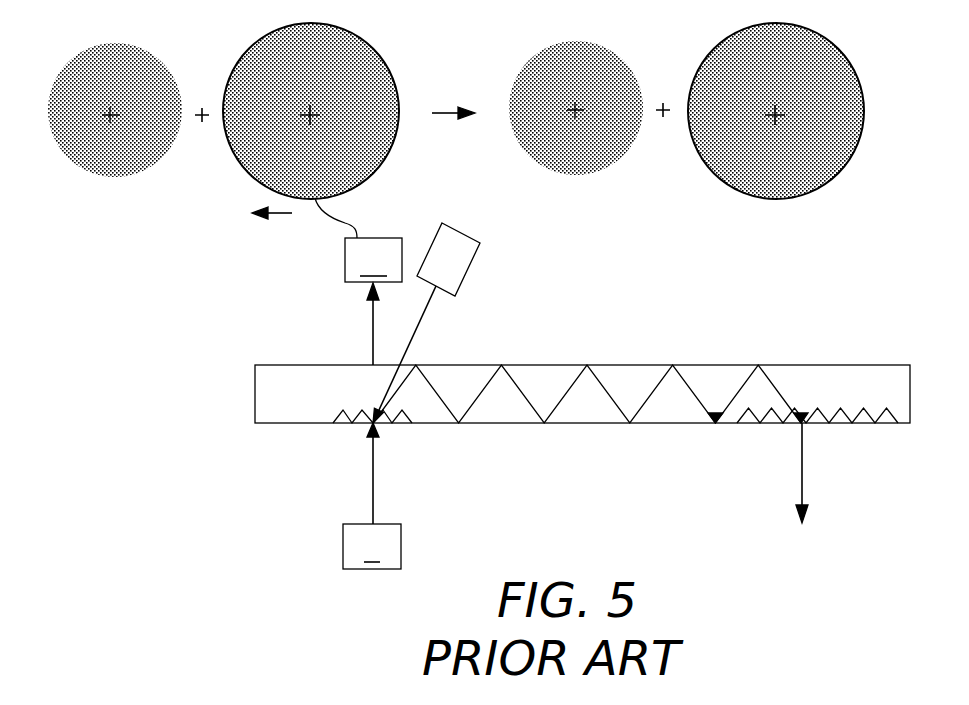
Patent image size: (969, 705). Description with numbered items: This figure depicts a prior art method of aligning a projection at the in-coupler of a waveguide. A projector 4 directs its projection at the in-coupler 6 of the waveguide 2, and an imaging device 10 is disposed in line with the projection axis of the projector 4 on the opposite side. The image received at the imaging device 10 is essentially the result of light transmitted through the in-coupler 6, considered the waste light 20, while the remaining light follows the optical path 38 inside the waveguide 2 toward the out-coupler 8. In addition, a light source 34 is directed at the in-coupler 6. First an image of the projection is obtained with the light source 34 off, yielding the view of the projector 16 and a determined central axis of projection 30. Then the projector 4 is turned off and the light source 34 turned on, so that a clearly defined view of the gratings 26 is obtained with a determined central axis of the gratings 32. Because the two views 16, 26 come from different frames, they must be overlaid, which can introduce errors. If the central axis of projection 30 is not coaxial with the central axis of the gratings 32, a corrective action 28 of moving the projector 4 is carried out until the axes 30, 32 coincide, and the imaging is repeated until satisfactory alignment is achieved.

The waveguide 2 is at (813, 364).
The projector 4 is at (372, 496).
The in-coupler 6 is at (336, 424).
The out-coupler 8 is at (746, 424).
The imaging device 10 is at (358, 240).
The view of projector as received by imaging device 16 is at (396, 140).
The light transmitted through waveguide 20 is at (373, 317).
The view of gratings as received by imaging device 26 is at (148, 55).
The corrective action 28 is at (275, 215).
The determined central axis of projection 30 is at (316, 112).
The determined central axis of gratings 32 is at (108, 113).
The light source directed at in-coupler 34 is at (463, 228).
The optical path 38 is at (567, 385).